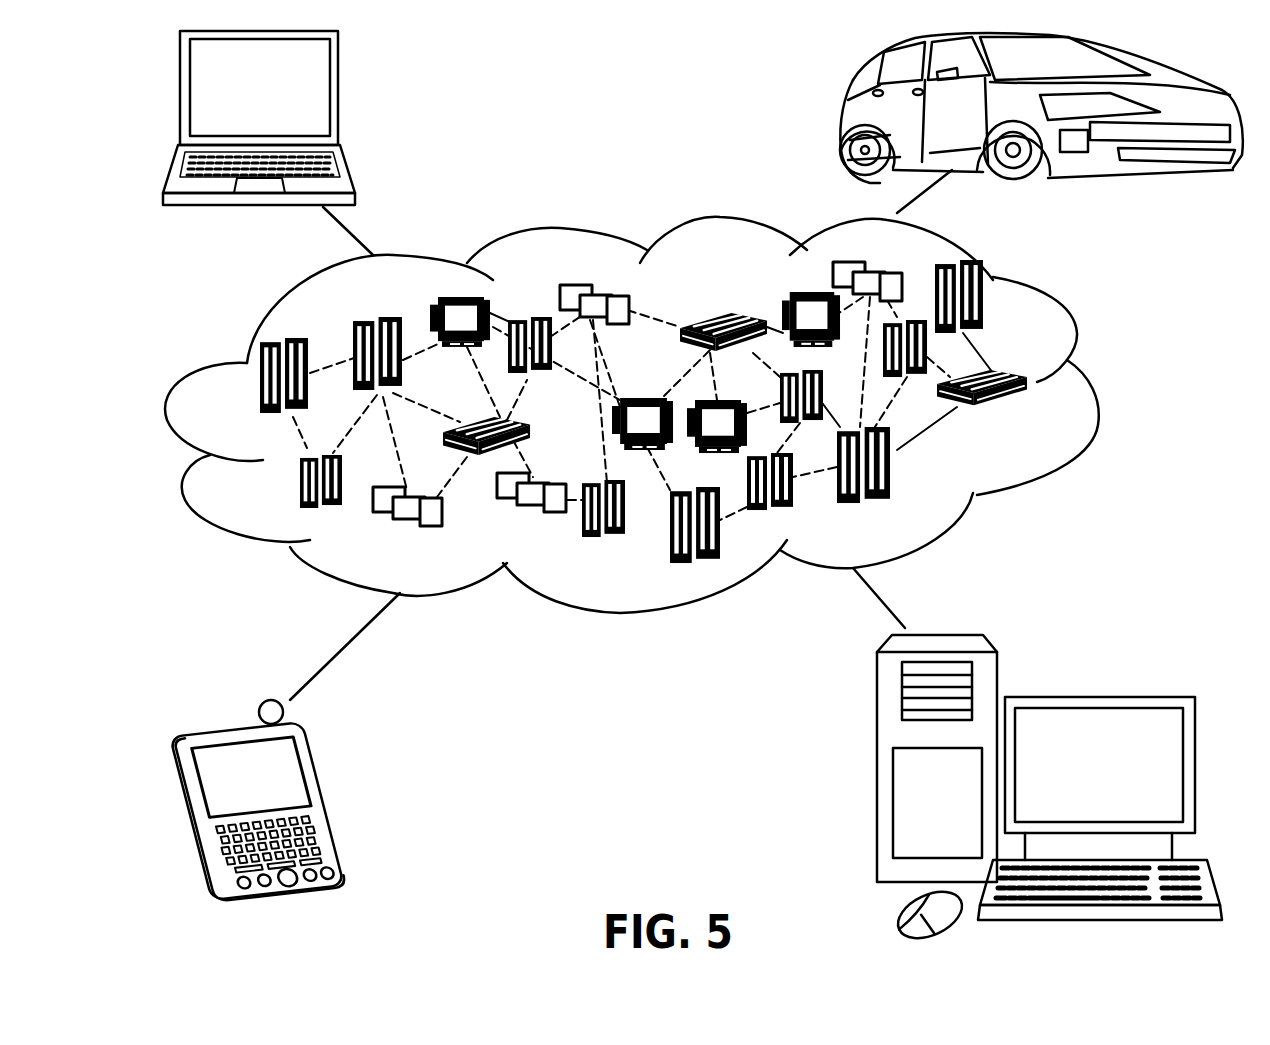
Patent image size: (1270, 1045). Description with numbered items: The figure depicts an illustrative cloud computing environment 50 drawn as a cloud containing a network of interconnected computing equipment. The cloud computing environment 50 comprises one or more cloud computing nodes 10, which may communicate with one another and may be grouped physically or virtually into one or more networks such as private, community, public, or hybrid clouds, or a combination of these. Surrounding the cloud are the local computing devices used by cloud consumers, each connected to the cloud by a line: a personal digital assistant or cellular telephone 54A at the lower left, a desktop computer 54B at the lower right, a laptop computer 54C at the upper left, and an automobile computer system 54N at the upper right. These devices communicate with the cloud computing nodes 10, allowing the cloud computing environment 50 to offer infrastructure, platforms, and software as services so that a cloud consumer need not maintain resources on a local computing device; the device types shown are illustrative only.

The cloud computing node 10 is at (1045, 422).
The cloud computing environment 50 is at (1097, 385).
The personal digital assistant or cellular telephone 54A is at (327, 797).
The desktop computer 54B is at (1098, 697).
The laptop computer 54C is at (340, 96).
The automobile computer system 54N is at (845, 116).